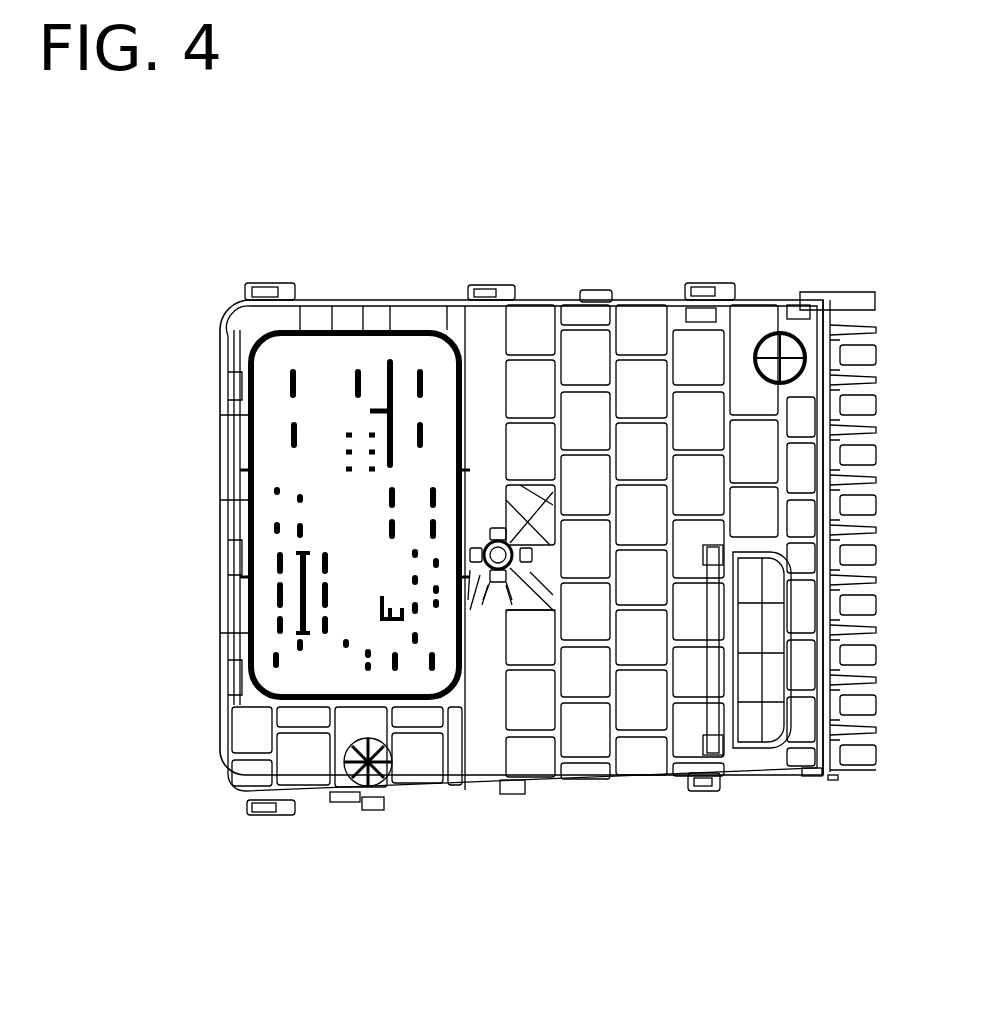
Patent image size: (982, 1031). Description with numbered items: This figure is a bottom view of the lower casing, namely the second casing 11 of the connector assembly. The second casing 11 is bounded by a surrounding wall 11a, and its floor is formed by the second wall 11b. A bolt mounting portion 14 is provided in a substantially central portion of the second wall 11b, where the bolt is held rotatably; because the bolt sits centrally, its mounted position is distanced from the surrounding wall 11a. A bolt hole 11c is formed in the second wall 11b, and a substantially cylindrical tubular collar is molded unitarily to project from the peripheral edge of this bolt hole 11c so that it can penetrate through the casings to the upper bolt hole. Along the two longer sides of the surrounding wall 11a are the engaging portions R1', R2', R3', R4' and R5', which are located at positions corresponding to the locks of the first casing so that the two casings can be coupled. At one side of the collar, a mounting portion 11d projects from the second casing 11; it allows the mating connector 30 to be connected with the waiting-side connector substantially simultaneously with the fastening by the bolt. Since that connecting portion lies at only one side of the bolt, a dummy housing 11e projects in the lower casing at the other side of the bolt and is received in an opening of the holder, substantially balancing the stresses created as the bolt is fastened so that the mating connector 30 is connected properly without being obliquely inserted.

The second casing 11 is at (222, 291).
The surrounding wall 11a is at (598, 291).
The second wall 11b is at (598, 730).
The bolt hole 11c is at (481, 590).
The mounting portion 11d is at (258, 505).
The dummy housing 11e is at (795, 740).
The bolt mounting portion 14 is at (512, 575).
The mating connector 30 is at (310, 465).
The engaging portion R1' is at (273, 855).
The engaging portion R2' is at (716, 829).
The engaging portion R3' is at (270, 244).
The engaging portion R4' is at (491, 243).
The engaging portion R5' is at (710, 255).